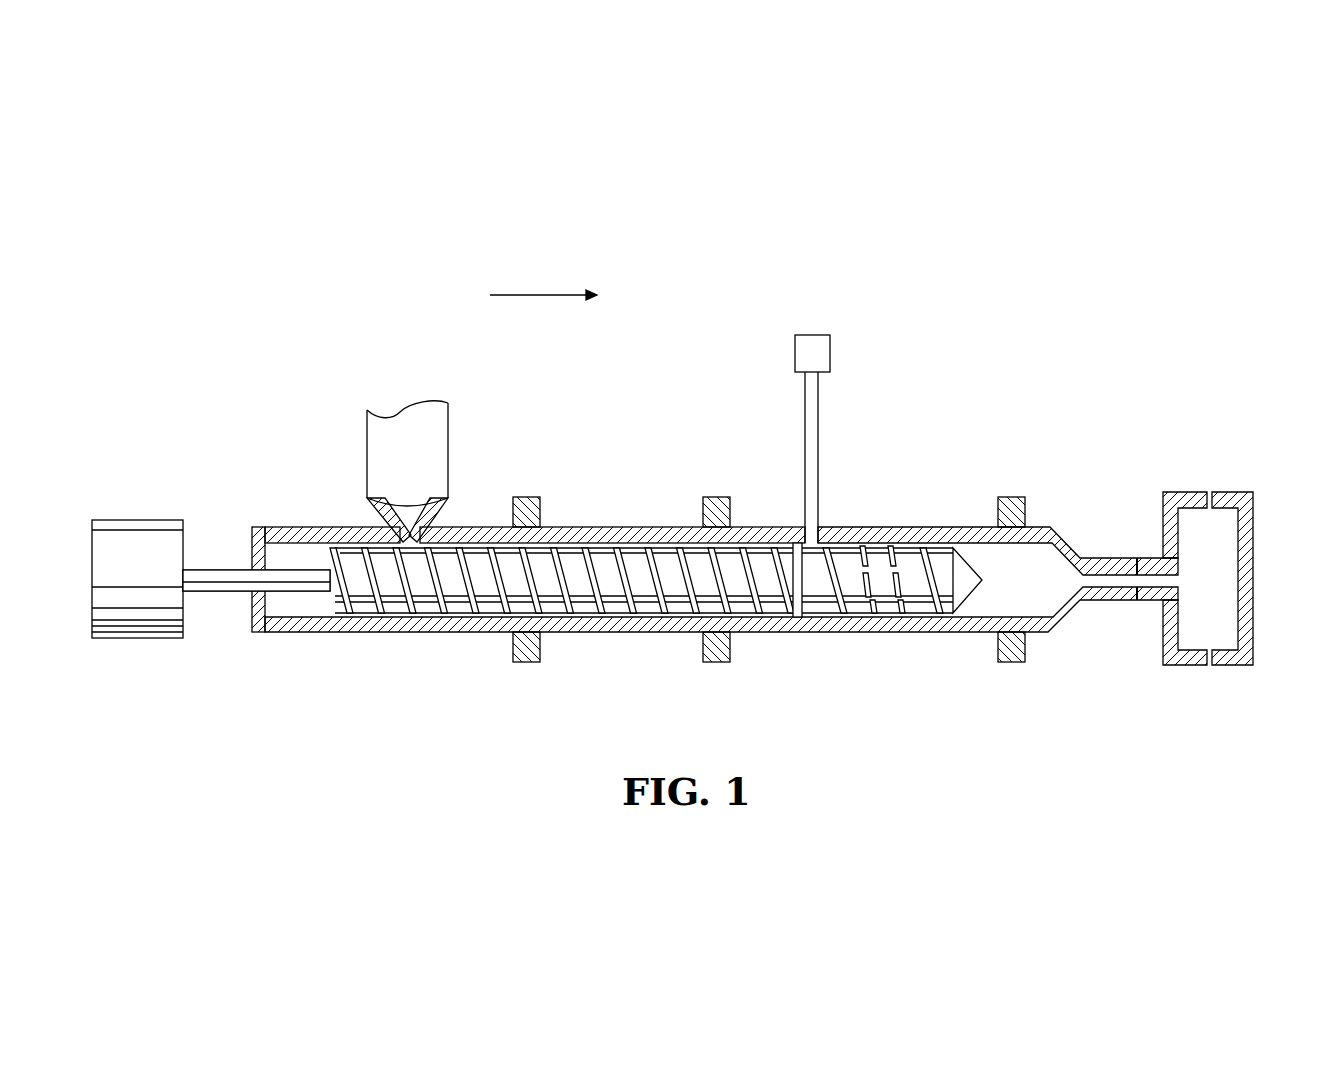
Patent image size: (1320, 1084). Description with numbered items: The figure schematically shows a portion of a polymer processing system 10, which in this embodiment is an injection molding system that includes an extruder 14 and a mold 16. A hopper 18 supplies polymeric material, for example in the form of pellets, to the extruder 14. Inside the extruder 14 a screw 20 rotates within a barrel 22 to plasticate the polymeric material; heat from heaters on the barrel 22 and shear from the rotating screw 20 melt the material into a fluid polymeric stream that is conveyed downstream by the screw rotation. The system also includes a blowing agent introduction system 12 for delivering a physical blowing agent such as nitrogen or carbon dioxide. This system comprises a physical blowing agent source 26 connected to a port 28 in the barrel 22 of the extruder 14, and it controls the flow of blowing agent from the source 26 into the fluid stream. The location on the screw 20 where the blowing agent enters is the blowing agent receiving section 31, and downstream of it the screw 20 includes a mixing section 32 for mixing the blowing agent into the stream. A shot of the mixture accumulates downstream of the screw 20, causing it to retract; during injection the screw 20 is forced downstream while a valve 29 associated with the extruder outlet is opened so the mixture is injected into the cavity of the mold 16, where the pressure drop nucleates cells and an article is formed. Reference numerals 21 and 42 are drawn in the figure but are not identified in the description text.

The polymer processing system 10 is at (645, 303).
The blowing agent introduction system 12 is at (853, 427).
The extruder 14 is at (682, 547).
The mold 16 is at (1253, 528).
The hopper 18 is at (408, 422).
The screw 20 is at (627, 530).
The barrel wall 21 is at (558, 527).
The barrel 22 is at (412, 632).
The physical blowing agent source 26 is at (827, 358).
The port 28 is at (820, 527).
The valve 29 is at (1138, 557).
The blowing agent receiving section 31 is at (656, 624).
The mixing section 32 is at (890, 614).
The restriction element 42 is at (785, 620).